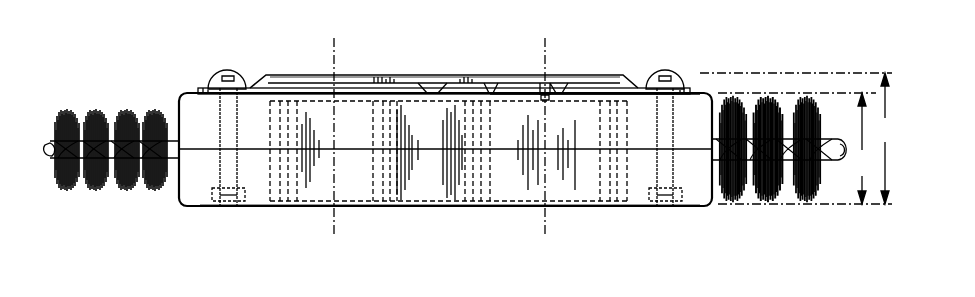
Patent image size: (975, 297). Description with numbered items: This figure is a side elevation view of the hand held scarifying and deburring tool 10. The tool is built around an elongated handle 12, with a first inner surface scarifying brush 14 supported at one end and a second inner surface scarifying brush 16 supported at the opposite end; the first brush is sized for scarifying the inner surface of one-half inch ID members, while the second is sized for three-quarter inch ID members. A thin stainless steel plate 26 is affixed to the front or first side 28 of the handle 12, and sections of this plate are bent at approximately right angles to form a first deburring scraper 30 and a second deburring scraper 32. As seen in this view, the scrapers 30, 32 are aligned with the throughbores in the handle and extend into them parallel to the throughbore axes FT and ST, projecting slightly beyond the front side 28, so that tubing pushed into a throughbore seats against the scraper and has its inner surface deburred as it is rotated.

The scarifying and deburring tool 10 is at (161, 61).
The elongated handle 12 is at (201, 213).
The first inner surface scarifying brush 14 is at (90, 186).
The second inner surface scarifying brush 16 is at (783, 212).
The plate 26 is at (407, 78).
The front or first side 28 is at (492, 94).
The first deburring scraper 30 is at (318, 80).
The second deburring scraper 32 is at (555, 94).